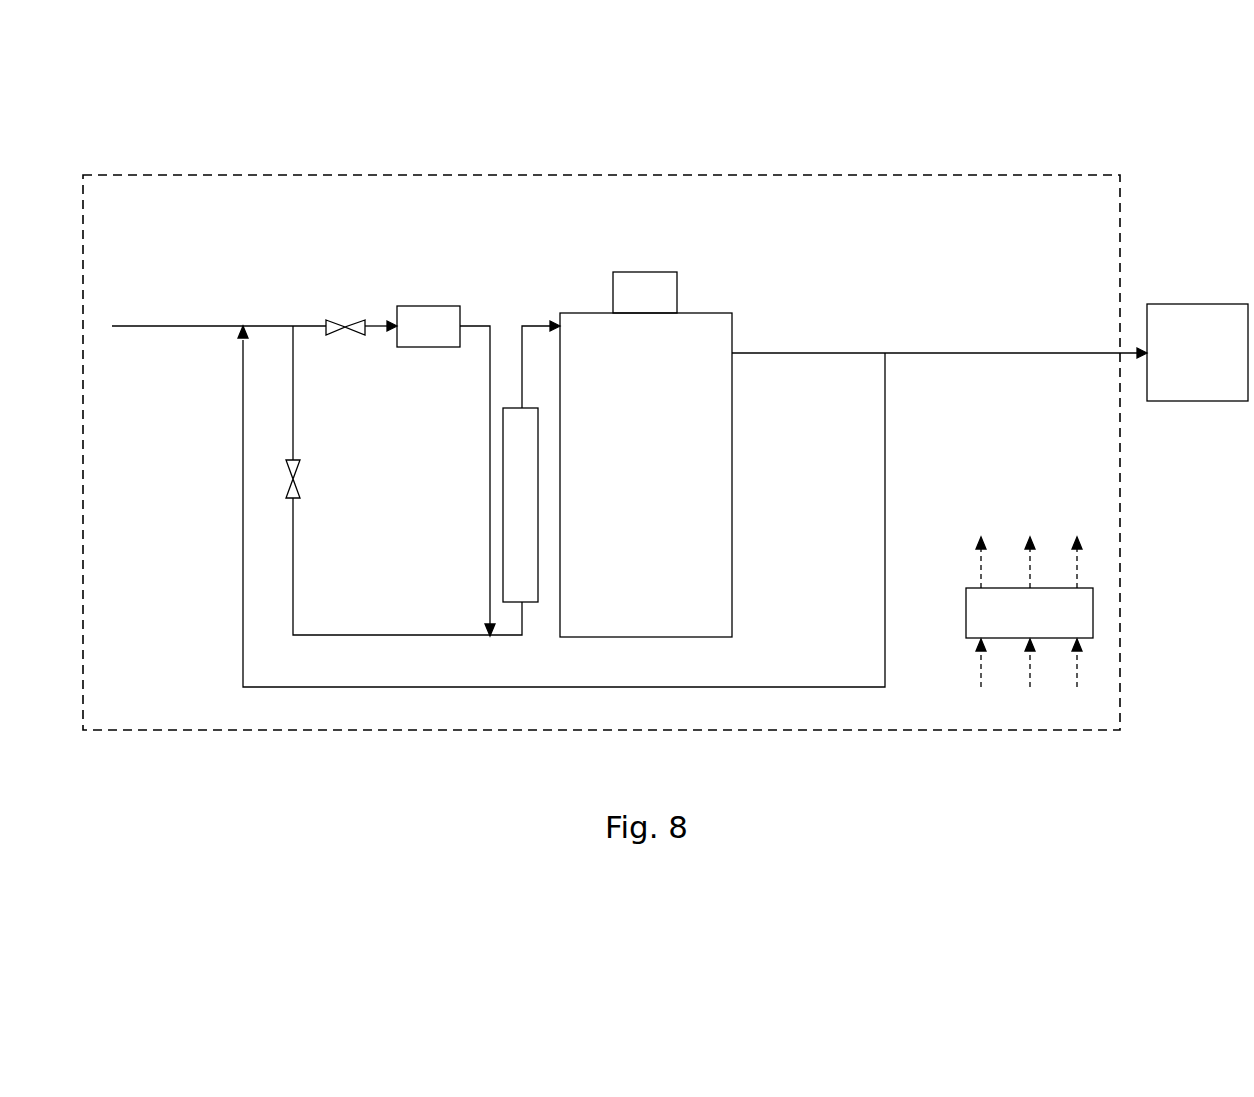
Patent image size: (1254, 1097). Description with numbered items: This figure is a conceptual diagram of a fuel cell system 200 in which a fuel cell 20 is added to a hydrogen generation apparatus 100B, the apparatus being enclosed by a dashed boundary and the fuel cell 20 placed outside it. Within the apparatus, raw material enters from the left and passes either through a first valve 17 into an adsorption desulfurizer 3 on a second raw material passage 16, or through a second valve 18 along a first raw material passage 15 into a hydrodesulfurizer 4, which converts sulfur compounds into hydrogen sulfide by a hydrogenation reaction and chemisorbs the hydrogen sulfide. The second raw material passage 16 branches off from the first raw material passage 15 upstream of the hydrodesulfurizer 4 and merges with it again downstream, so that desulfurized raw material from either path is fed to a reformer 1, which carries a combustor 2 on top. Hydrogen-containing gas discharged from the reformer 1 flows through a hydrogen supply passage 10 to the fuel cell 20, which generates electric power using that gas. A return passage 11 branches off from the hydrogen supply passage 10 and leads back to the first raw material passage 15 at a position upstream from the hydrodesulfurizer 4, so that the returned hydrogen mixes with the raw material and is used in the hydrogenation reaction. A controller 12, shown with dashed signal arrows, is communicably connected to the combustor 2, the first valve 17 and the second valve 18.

The hydrogen generation apparatus 100B is at (177, 175).
The fuel cell system 200 is at (572, 164).
The reformer 1 is at (690, 311).
The combustor 2 is at (678, 281).
The adsorption desulfurizer 3 is at (418, 306).
The hydrodesulfurizer 4 is at (532, 602).
The hydrogen supply passage 10 is at (903, 353).
The return passage 11 is at (886, 458).
The controller 12 is at (1029, 612).
The first raw material passage 15 is at (381, 635).
The second raw material passage 16 is at (478, 325).
The first valve 17 is at (337, 333).
The second valve 18 is at (300, 486).
The fuel cell 20 is at (1193, 402).